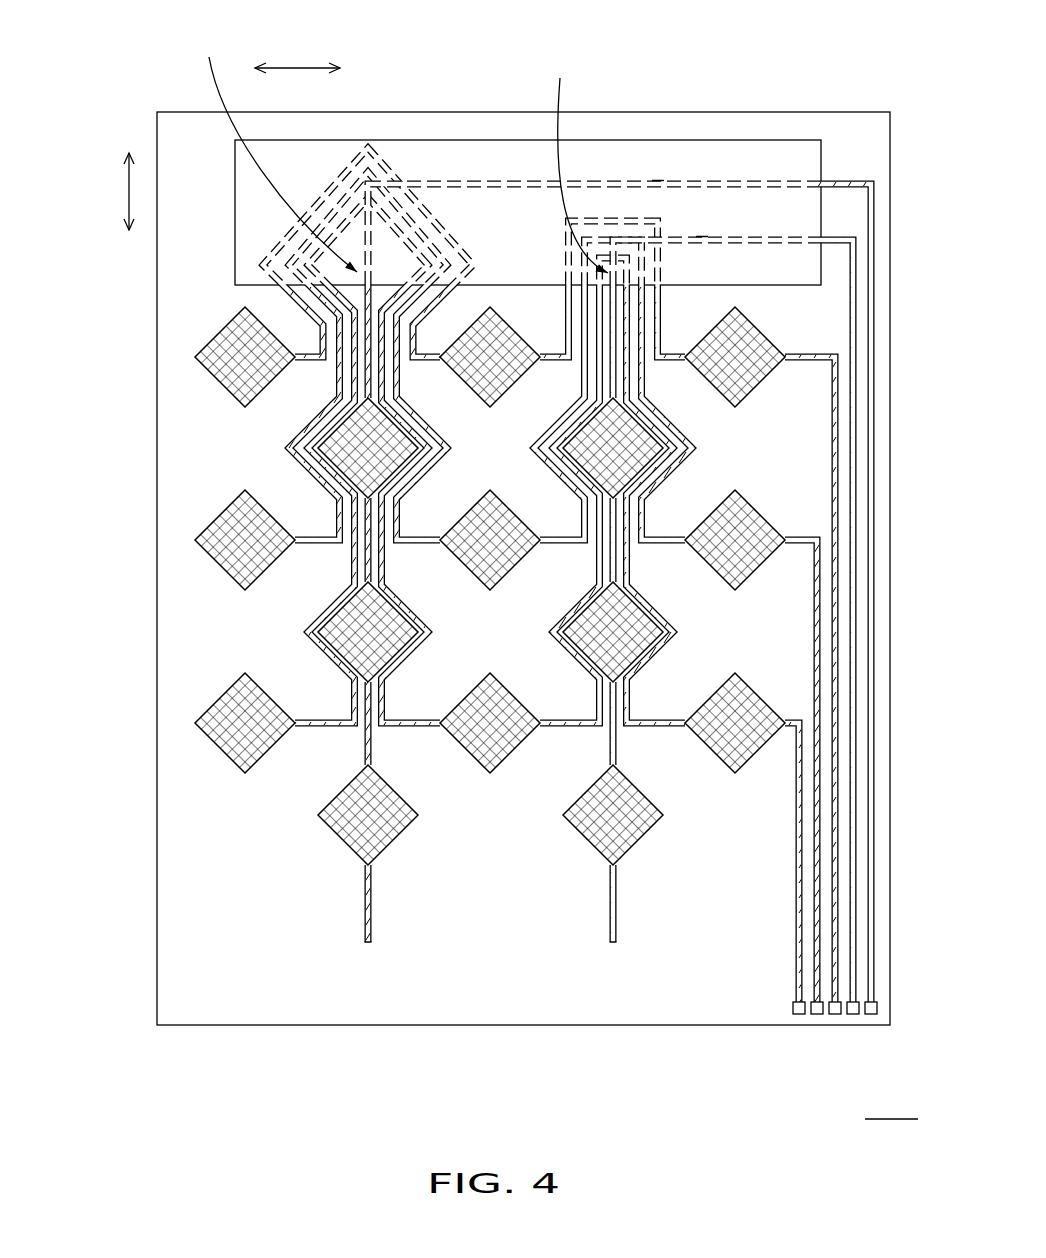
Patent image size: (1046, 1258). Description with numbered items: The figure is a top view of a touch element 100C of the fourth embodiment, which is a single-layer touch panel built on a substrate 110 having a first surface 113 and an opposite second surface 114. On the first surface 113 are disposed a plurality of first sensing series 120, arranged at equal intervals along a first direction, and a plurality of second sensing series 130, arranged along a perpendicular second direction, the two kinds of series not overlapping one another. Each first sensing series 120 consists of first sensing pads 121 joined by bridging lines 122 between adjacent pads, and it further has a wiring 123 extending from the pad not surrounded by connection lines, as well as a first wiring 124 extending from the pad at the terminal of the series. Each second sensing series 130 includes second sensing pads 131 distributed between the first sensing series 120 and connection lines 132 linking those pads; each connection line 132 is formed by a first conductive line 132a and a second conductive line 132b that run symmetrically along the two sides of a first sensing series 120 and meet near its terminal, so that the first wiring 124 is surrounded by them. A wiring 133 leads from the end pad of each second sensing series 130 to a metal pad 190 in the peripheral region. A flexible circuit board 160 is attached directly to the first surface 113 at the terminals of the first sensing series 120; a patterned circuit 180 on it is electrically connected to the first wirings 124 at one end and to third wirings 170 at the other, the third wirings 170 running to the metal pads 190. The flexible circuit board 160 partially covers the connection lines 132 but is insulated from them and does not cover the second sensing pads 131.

The touch element 100C is at (506, 564).
The substrate 110 is at (190, 140).
The first surface 113 is at (220, 912).
The second surface 114 is at (220, 958).
The first sensing series 120 is at (525, 591).
The first sensing pad 121 is at (335, 452).
The bridging line 122 is at (362, 748).
The wiring 123 is at (368, 893).
The first wiring 124 is at (365, 292).
The second sensing series 130 is at (471, 575).
The second sensing pad 131 is at (230, 375).
The connection line 132 is at (477, 365).
The first conductive line 132a is at (423, 203).
The second conductive line 132b is at (327, 183).
The wiring 133 is at (837, 857).
The flexible circuit board 160 is at (742, 150).
The third wiring 170 is at (871, 180).
The patterned circuit 180 is at (702, 238).
The metal pad 190 is at (815, 1015).